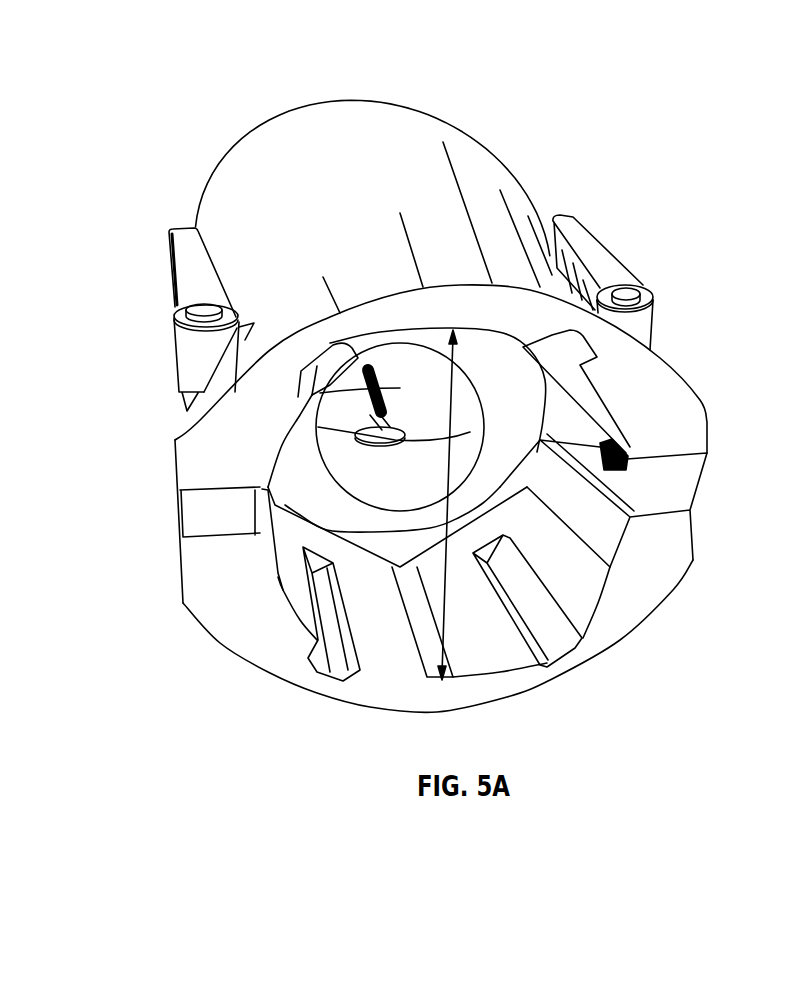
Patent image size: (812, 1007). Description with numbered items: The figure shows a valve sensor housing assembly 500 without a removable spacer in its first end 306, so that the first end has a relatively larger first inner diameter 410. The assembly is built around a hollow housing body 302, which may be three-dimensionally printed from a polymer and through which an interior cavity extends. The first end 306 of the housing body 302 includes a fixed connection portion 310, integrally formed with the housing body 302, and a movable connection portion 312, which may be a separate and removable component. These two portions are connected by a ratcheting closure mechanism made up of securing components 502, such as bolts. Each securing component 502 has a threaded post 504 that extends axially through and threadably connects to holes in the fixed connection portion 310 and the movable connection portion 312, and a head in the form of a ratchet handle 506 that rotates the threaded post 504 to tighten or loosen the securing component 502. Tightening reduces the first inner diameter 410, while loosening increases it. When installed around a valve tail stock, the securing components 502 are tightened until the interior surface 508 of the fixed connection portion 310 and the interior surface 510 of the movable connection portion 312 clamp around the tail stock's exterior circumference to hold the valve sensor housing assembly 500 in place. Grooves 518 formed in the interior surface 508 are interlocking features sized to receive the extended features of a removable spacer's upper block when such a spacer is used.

The valve sensor housing assembly 500 is at (186, 85).
The housing body 302 is at (394, 112).
The first end 306 is at (397, 510).
The fixed connection portion 310 is at (228, 412).
The movable connection portion 312 is at (434, 587).
The first inner diameter 410 is at (477, 418).
The securing component 502 is at (660, 367).
The threaded post 504 is at (635, 500).
The ratchet handle 506 is at (580, 236).
The interior surface of the fixed connection portion 508 is at (560, 374).
The interior surface of the movable connection portion 510 is at (402, 660).
The grooves 518 is at (325, 365).